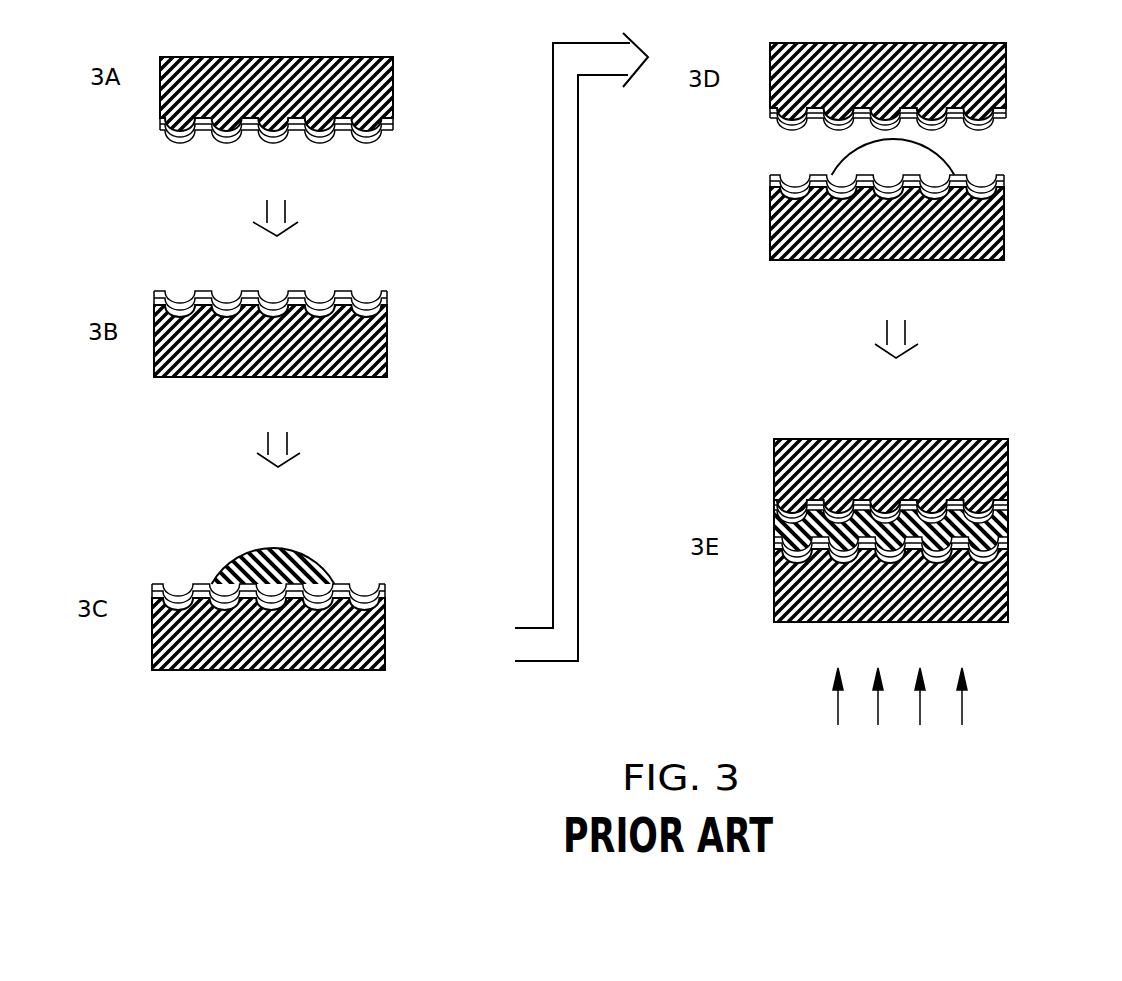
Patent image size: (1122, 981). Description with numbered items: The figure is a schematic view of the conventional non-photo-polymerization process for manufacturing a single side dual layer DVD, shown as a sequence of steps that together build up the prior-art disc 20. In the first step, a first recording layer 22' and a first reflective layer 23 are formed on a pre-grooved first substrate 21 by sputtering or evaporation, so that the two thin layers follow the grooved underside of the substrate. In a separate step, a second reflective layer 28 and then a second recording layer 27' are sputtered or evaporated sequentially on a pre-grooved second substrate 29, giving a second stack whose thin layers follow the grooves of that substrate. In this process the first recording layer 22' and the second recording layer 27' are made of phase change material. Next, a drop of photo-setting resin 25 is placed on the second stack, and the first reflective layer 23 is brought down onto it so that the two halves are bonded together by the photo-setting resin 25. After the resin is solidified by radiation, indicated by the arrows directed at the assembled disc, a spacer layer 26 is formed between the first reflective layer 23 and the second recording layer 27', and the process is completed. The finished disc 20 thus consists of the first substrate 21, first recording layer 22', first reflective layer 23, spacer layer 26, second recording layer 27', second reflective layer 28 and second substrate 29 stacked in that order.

The single side single layer DVD-R 20 is at (738, 441).
The first substrate 21 is at (393, 80).
The first recording layer 22' is at (632, 309).
The first reflective layer 23 is at (395, 133).
The photo-setting resin 25 is at (306, 560).
The spacer layer 26 is at (1008, 527).
The second recording layer 27' is at (628, 380).
The second reflective layer 28 is at (387, 305).
The second substrate 29 is at (387, 343).